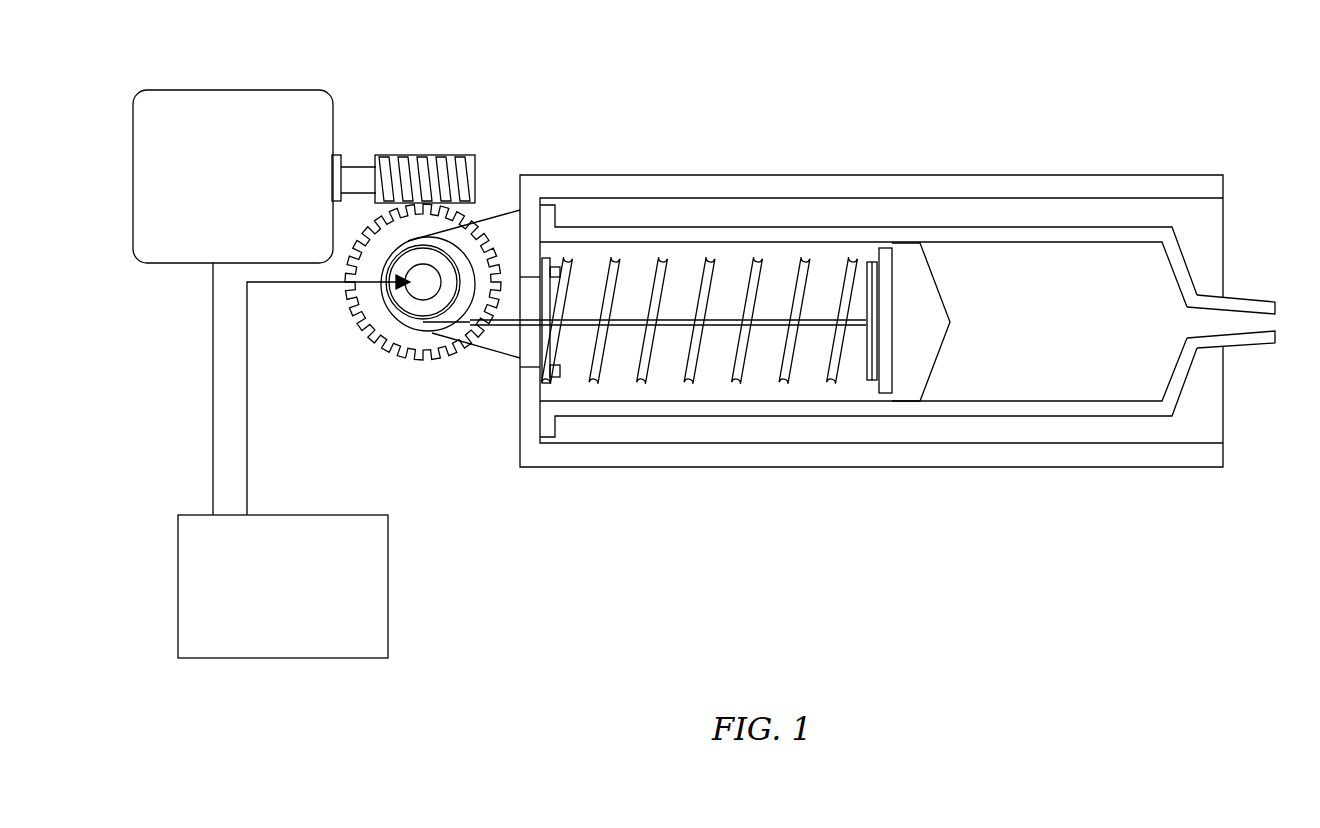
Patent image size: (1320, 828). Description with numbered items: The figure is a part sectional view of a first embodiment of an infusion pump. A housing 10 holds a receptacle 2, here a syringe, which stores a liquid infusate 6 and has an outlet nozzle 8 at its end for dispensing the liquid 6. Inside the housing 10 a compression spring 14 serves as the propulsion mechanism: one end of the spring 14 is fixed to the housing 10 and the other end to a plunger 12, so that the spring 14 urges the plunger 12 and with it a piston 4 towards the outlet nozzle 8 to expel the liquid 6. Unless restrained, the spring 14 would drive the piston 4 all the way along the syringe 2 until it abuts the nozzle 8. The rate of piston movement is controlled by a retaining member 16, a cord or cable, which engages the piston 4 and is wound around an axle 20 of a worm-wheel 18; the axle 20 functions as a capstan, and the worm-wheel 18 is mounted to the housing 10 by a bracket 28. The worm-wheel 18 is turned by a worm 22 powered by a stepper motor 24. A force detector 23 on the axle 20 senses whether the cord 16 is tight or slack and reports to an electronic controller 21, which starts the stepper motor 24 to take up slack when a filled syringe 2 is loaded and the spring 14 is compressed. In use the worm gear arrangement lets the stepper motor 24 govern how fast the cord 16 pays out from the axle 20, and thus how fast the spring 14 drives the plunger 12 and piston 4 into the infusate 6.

The receptacle 2 is at (871, 285).
The piston 4 is at (930, 228).
The liquid infusate 6 is at (1135, 380).
The outlet nozzle 8 is at (1255, 323).
The housing 10 is at (868, 270).
The plunger 12 is at (917, 383).
The compression spring 14 is at (700, 422).
The retaining member 16 is at (583, 397).
The worm-wheel 18 is at (391, 298).
The axle 20 is at (387, 367).
The electronic controller 21 is at (288, 623).
The worm 22 is at (438, 144).
The force detector 23 is at (400, 283).
The stepper motor 24 is at (254, 140).
The bracket 28 is at (498, 230).